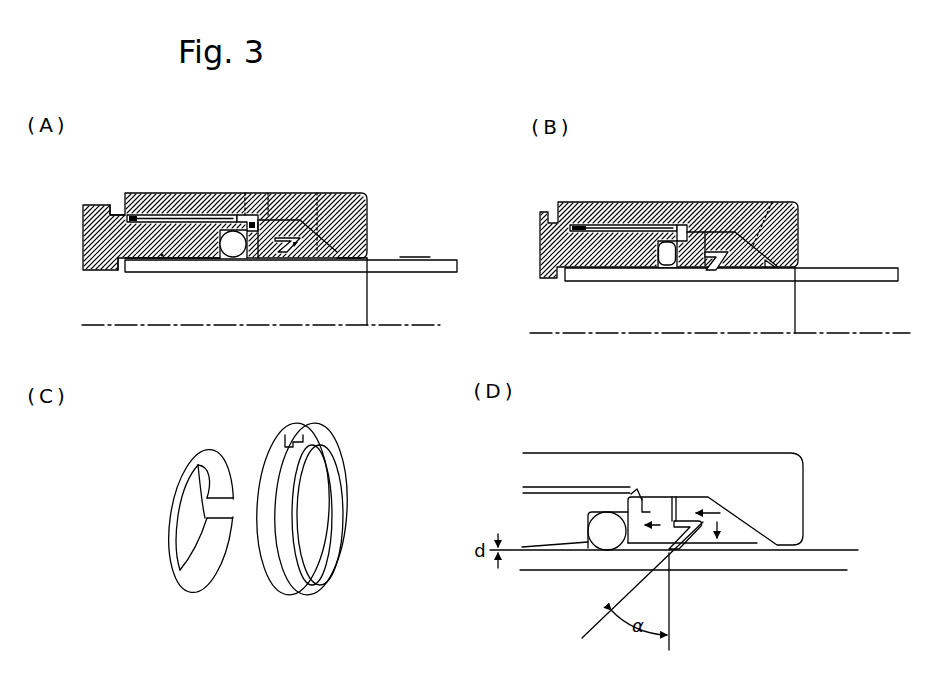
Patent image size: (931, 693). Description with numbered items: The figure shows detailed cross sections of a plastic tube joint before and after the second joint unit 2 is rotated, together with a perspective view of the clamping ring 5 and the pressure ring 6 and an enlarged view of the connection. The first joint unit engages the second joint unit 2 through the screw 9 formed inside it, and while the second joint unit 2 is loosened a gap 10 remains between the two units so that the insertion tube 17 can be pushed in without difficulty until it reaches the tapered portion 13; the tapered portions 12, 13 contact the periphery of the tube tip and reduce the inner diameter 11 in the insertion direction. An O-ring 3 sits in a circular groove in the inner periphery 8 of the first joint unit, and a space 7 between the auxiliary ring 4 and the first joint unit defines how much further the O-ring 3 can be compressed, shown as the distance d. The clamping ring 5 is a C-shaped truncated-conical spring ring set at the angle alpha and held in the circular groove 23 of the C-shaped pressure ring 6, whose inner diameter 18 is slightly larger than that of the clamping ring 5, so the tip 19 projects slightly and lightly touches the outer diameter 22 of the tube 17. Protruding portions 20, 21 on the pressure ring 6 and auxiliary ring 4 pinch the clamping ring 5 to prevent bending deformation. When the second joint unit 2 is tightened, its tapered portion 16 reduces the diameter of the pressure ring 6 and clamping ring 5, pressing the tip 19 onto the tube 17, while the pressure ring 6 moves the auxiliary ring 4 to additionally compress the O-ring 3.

The second joint unit 2 is at (342, 192).
The O-ring 3 is at (233, 257).
The auxiliary ring 4 is at (262, 258).
The clamping ring 5 is at (280, 254).
The pressure ring 6 is at (315, 258).
The space 7 is at (268, 197).
The inner periphery 8 is at (245, 190).
The screw 9 is at (208, 215).
The gap 10 is at (120, 210).
The inner diameter 11 is at (357, 258).
The tapered portion 12 is at (198, 258).
The tapered portion 13 is at (120, 262).
The tapered portion 16 is at (318, 188).
The insertion tube 17 is at (428, 263).
The inner diameter 18 is at (722, 547).
The tip 19 is at (712, 270).
The protruding portion 20 is at (693, 542).
The protruding portion 21 is at (682, 520).
The outer diameter 22 is at (392, 257).
The circular groove 23 is at (286, 433).